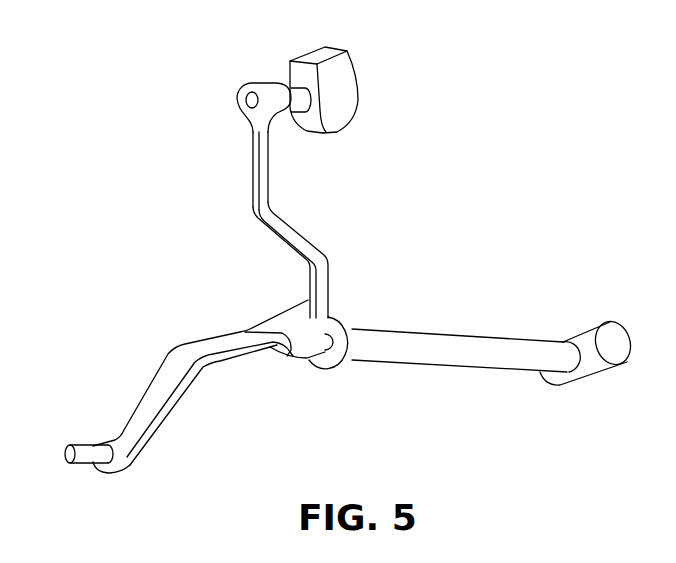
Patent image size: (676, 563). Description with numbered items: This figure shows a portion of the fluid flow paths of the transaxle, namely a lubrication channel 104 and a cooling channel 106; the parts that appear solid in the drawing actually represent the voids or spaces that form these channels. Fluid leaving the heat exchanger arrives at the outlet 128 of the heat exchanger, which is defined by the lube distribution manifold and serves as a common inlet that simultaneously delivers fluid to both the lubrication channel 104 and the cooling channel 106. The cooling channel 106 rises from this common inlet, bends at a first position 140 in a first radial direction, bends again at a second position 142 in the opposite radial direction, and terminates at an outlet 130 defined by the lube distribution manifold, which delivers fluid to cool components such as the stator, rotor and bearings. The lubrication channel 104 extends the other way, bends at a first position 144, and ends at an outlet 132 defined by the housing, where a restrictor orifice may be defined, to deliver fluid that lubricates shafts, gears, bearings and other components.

The lubrication channel 104 is at (174, 380).
The cooling channel 106 is at (282, 200).
The outlet of the heat exchanger 128 is at (306, 343).
The outlet of the cooling channel 130 is at (290, 88).
The outlet of the lubrication channel 132 is at (76, 445).
The first position 140 is at (322, 258).
The second position 142 is at (255, 218).
The first position 144 is at (173, 348).